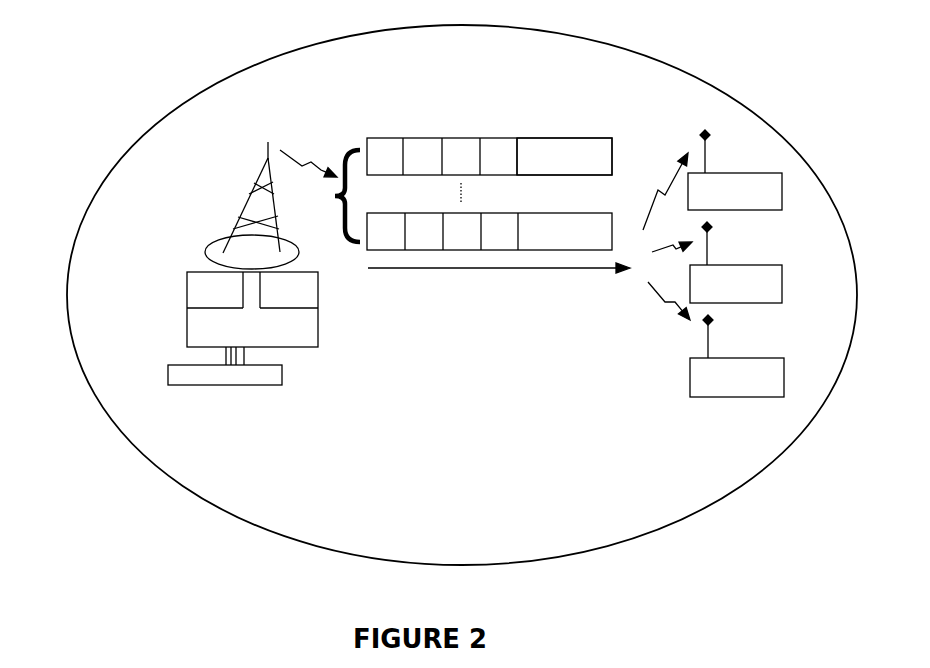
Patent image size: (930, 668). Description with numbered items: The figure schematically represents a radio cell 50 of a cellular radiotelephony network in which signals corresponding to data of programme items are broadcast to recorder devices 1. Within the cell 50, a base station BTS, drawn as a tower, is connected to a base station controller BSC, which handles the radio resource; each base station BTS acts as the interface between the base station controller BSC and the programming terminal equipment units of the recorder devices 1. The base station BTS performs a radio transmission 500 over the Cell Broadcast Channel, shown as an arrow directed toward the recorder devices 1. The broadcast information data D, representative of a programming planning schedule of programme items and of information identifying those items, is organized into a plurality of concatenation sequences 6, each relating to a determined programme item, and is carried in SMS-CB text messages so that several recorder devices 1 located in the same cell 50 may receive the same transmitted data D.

The radio cell 50 is at (210, 503).
The base station BTS is at (318, 345).
The base station controller BSC is at (282, 383).
The information data D is at (518, 128).
The concatenation sequence 6 is at (615, 146).
The radio transmission 500 is at (538, 270).
The recorder device 1 is at (768, 388).